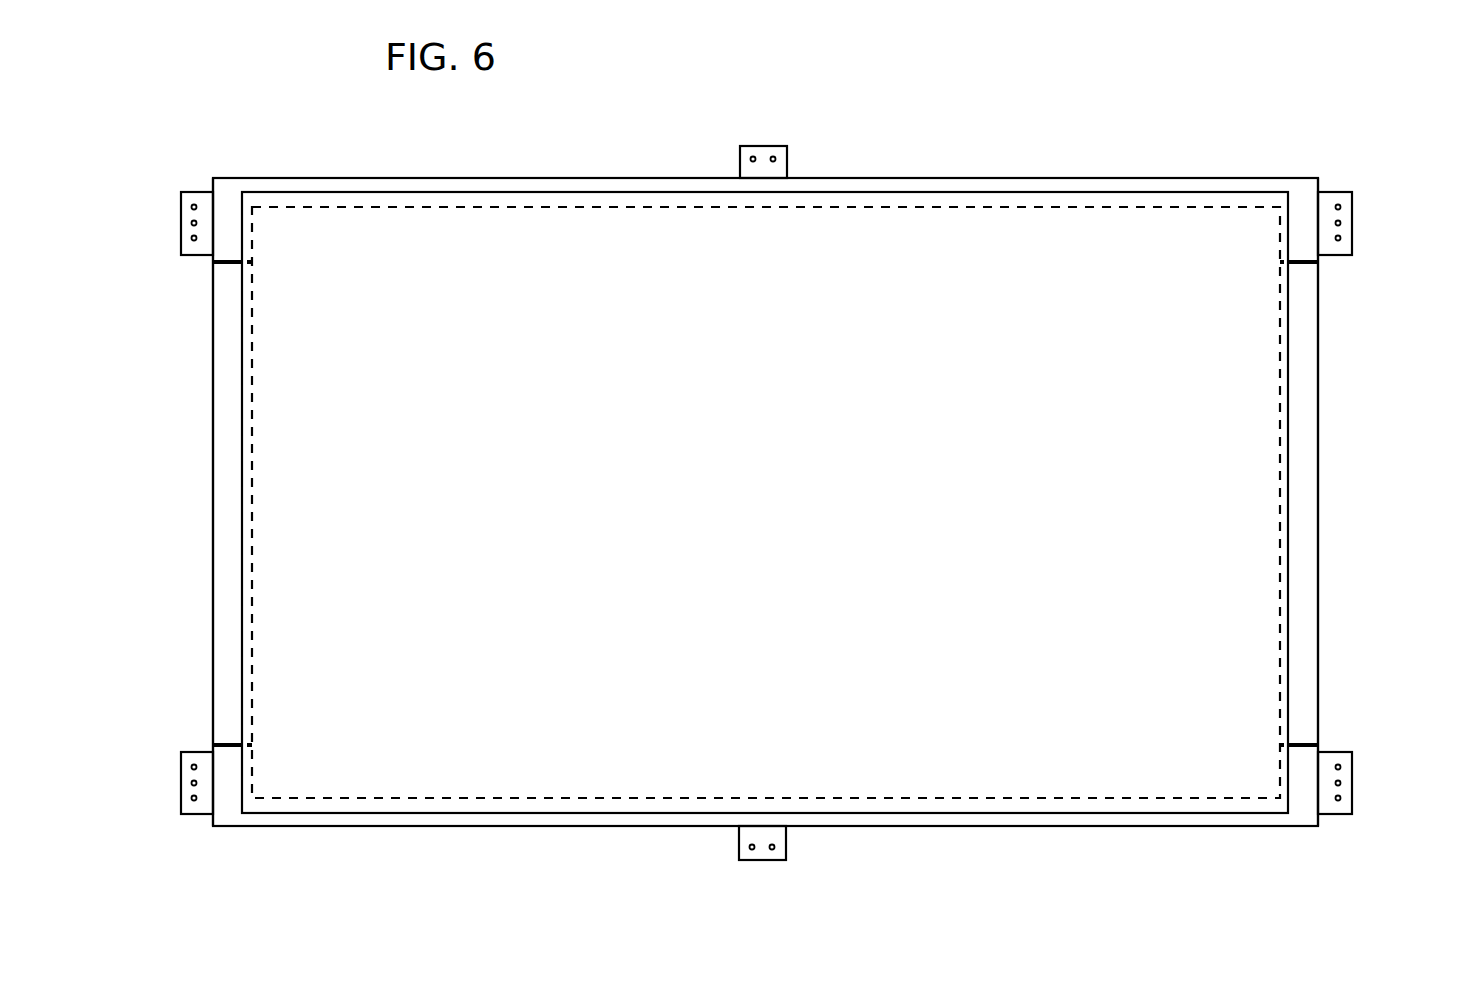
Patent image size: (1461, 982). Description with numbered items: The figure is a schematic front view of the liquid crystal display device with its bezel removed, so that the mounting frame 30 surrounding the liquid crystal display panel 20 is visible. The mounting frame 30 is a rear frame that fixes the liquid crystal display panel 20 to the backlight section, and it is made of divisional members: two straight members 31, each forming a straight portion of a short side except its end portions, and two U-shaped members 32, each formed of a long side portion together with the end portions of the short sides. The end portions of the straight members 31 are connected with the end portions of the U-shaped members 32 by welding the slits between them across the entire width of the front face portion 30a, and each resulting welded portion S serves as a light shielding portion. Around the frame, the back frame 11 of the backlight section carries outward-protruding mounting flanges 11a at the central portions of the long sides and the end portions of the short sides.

The back frame 11 is at (1333, 192).
The mounting flange 11a is at (787, 503).
The liquid crystal display panel 20 is at (737, 520).
The mounting frame 30 is at (1000, 178).
The front face portion 30a is at (930, 188).
The straight member 31 is at (213, 487).
The U-shaped member 32 is at (805, 178).
The welded portion S is at (213, 263).